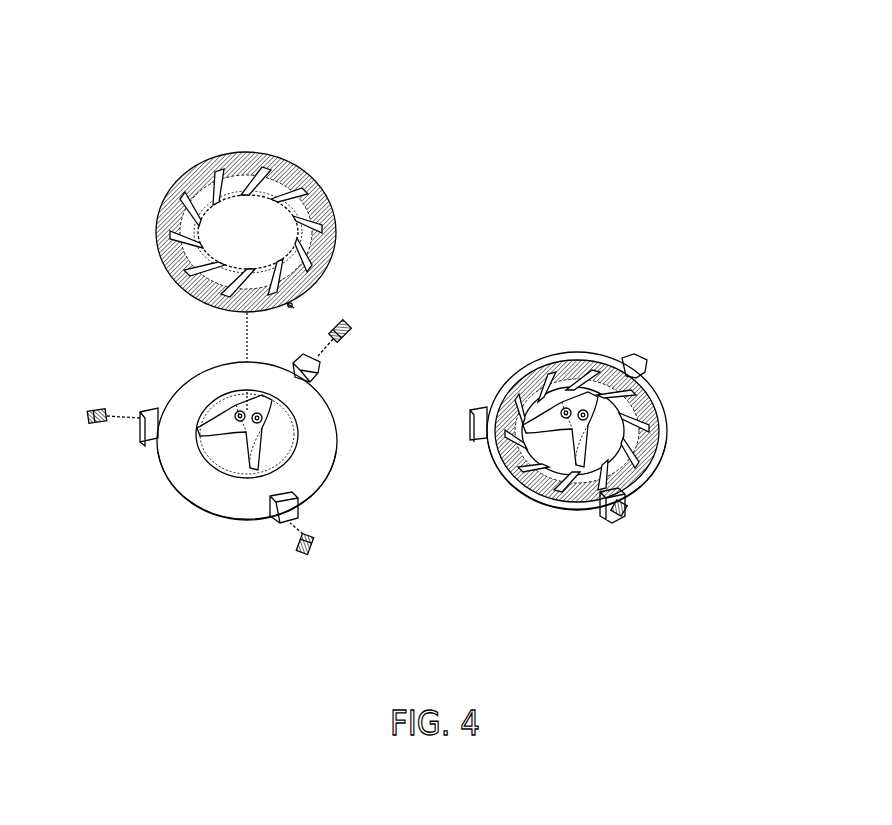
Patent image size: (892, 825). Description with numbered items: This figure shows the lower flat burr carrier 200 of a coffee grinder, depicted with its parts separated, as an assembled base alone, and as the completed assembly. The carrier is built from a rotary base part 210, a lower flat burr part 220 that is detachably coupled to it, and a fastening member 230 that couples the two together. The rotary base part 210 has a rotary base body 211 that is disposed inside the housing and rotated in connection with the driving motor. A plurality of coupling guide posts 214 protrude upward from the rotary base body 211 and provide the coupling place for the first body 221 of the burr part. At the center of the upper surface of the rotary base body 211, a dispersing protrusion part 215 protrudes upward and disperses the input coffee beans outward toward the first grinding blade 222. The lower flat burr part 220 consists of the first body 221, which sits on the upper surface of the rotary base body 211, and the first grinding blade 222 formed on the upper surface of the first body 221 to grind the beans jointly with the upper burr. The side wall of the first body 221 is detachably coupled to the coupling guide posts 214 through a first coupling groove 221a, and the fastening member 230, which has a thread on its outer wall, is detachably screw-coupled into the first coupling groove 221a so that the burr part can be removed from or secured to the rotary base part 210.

The lower flat burr carrier 200 is at (161, 131).
The rotary base part 210 is at (362, 428).
The rotary base body 211 is at (188, 470).
The coupling guide posts 214 is at (150, 408).
The dispersing protrusion part 215 is at (298, 452).
The lower flat burr part 220 is at (362, 200).
The first body 221 is at (333, 262).
The first coupling groove 221a is at (293, 305).
The first grinding blade 222 is at (302, 168).
The fastening member 230 is at (98, 408).